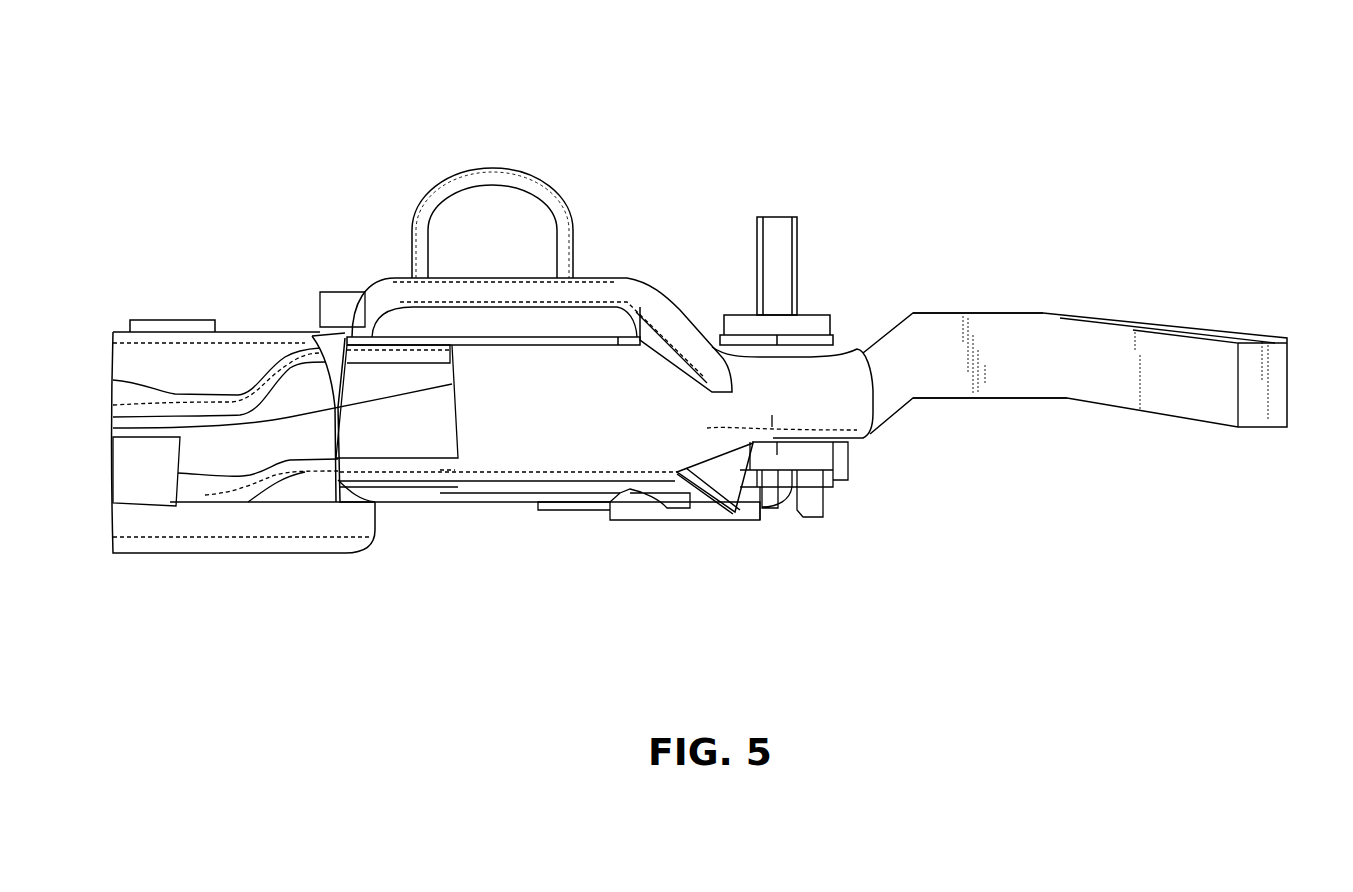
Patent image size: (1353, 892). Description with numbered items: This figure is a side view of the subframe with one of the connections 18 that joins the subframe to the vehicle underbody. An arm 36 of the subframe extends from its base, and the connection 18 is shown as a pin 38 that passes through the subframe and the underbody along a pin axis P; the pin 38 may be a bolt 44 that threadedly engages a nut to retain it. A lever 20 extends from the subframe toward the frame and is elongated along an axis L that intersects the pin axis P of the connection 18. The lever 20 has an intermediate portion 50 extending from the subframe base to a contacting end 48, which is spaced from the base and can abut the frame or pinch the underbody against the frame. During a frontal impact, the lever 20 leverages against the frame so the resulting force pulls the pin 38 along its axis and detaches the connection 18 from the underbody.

The connection 18 is at (849, 225).
The lever 20 is at (1045, 325).
The arm 36 is at (193, 590).
The pin 38 is at (757, 271).
The bolt 44 is at (776, 330).
The contacting end 48 is at (1220, 333).
The intermediate portion 50 is at (945, 320).